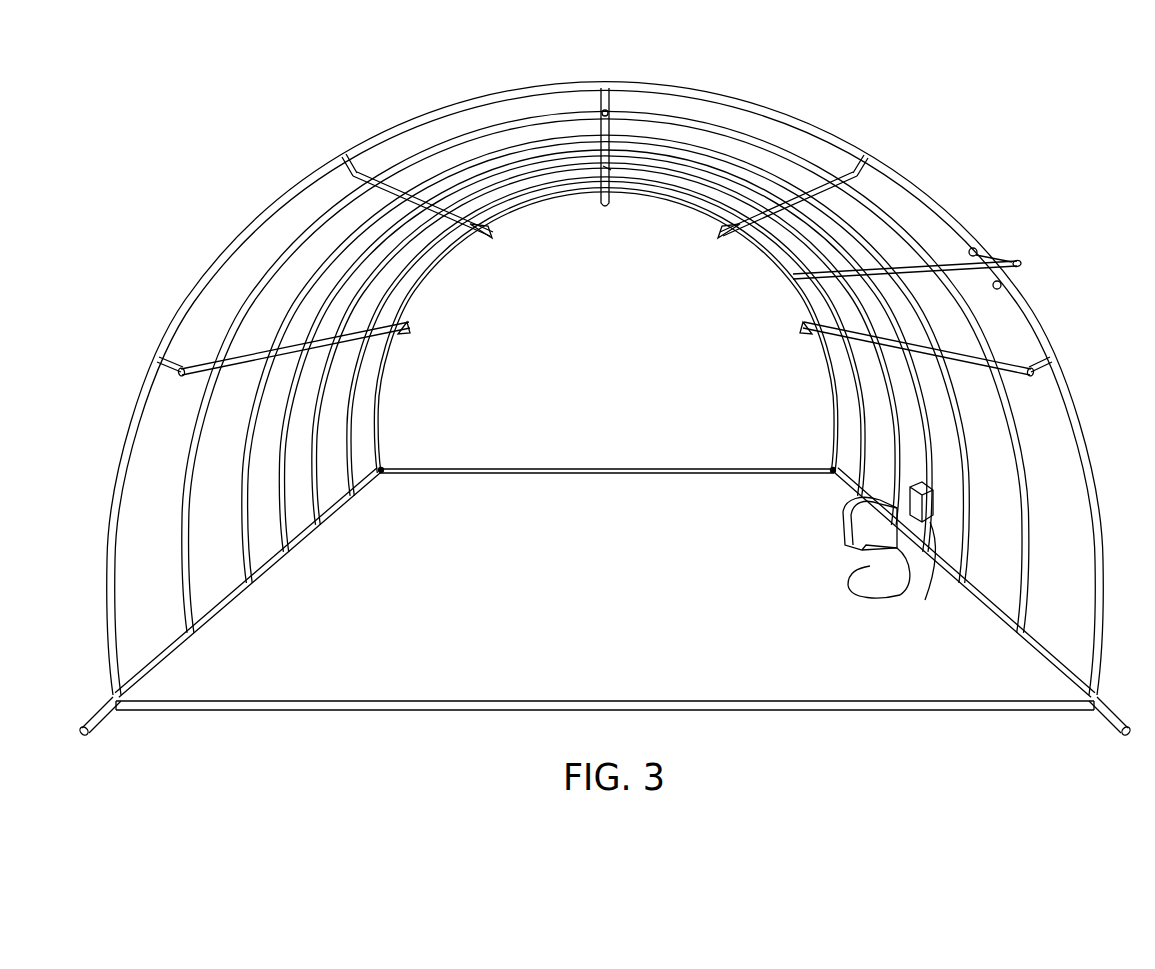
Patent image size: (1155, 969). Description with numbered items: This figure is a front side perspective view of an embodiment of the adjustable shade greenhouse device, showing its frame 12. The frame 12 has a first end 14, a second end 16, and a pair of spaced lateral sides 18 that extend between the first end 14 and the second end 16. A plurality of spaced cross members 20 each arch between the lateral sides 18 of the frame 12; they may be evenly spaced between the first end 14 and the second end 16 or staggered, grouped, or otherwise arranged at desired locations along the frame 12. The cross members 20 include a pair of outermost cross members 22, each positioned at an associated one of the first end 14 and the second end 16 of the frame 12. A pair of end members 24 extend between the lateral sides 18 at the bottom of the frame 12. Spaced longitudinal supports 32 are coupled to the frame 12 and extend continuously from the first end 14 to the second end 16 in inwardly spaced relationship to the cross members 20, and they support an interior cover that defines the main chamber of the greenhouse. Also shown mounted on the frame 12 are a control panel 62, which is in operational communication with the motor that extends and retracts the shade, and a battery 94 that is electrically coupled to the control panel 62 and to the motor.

The frame 12 is at (870, 100).
The first end 14 is at (886, 148).
The second end 16 is at (606, 222).
The lateral sides 18 is at (240, 598).
The cross members 20 is at (428, 160).
The outermost cross members 22 is at (606, 80).
The end members 24 is at (596, 474).
The longitudinal supports 32 is at (608, 168).
The control panel 62 is at (848, 530).
The battery 94 is at (933, 525).